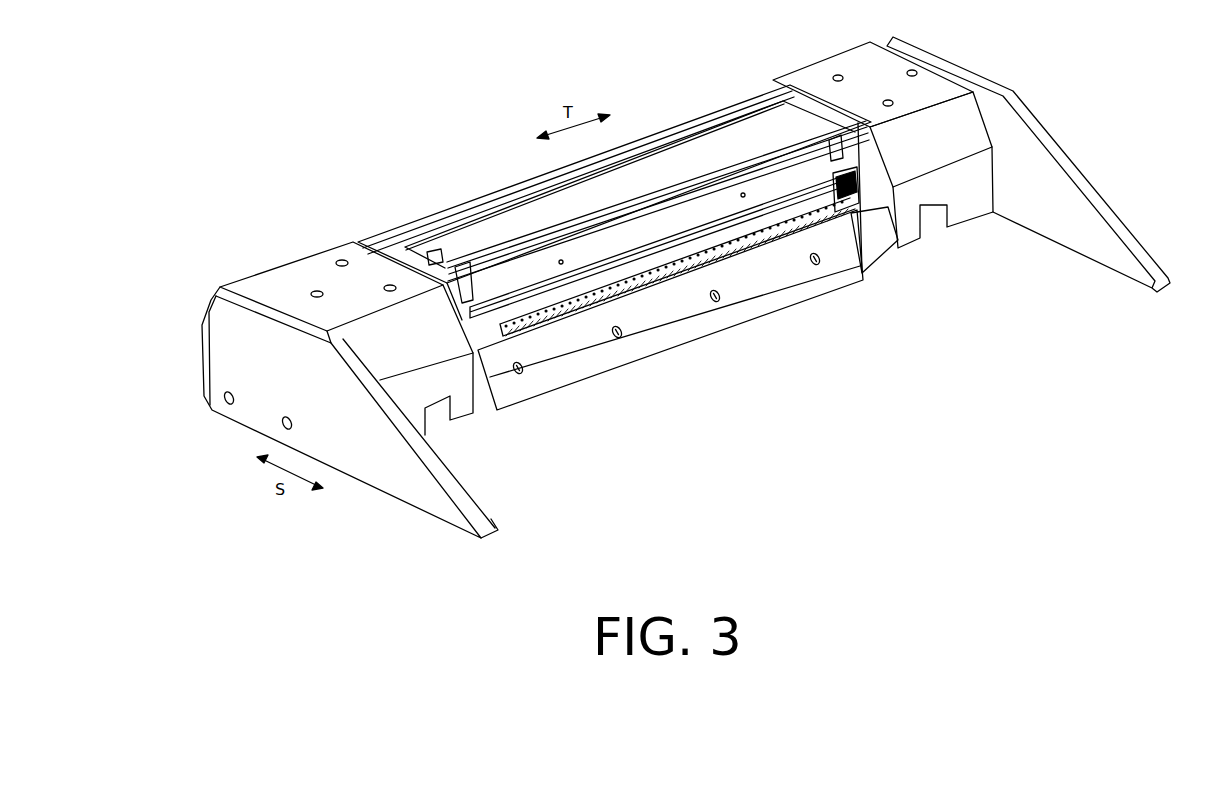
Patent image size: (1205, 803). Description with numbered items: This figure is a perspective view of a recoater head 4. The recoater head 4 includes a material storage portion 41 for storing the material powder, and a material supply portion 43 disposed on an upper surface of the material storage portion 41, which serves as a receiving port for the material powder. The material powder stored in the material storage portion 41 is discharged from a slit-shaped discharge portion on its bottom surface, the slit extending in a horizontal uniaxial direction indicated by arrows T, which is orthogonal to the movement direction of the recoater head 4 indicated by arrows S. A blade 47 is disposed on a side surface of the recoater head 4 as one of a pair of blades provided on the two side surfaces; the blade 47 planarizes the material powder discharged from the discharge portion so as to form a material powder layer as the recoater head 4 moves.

The recoater head 4 is at (686, 287).
The material storage portion 41 is at (503, 273).
The material supply portion 43 is at (757, 122).
The blade 47 is at (807, 287).